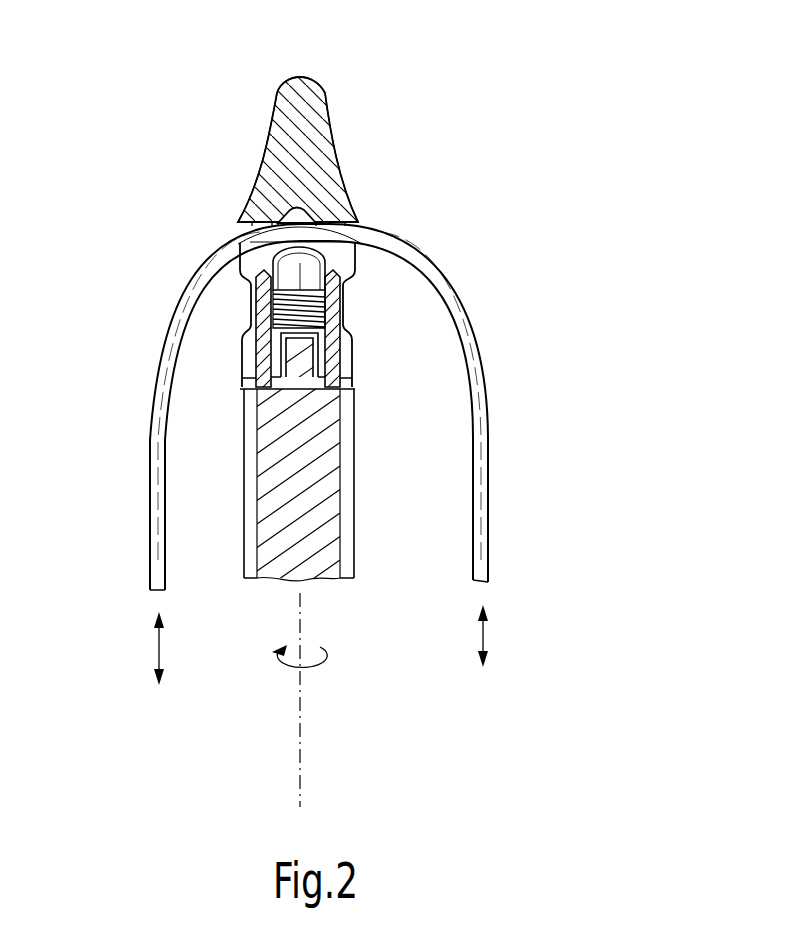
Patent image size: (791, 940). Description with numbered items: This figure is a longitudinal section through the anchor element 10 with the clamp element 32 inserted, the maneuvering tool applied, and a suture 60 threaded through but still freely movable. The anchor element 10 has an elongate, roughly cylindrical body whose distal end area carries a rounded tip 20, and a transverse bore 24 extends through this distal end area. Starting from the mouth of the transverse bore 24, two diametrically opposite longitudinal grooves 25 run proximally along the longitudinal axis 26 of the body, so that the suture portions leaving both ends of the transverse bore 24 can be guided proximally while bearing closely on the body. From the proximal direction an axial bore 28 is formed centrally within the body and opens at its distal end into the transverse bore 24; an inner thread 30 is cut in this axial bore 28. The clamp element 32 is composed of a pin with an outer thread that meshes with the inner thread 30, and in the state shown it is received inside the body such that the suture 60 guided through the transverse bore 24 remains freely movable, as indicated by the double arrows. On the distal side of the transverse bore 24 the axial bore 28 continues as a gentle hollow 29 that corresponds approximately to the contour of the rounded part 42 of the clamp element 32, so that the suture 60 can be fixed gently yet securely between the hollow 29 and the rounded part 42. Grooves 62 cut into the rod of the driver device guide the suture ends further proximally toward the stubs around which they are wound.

The anchor element 10 is at (207, 183).
The rounded tip 20 is at (312, 110).
The gentle hollow 29 is at (297, 208).
The transverse bore 24 is at (360, 223).
The rounded part 42 is at (240, 245).
The suture 60 is at (465, 316).
The inner thread 30 is at (350, 303).
The clamp element 32 is at (252, 313).
The axial bore 28 is at (315, 372).
The longitudinal grooves 25 is at (243, 378).
The grooves 62 is at (250, 537).
The longitudinal axis 26 is at (300, 758).